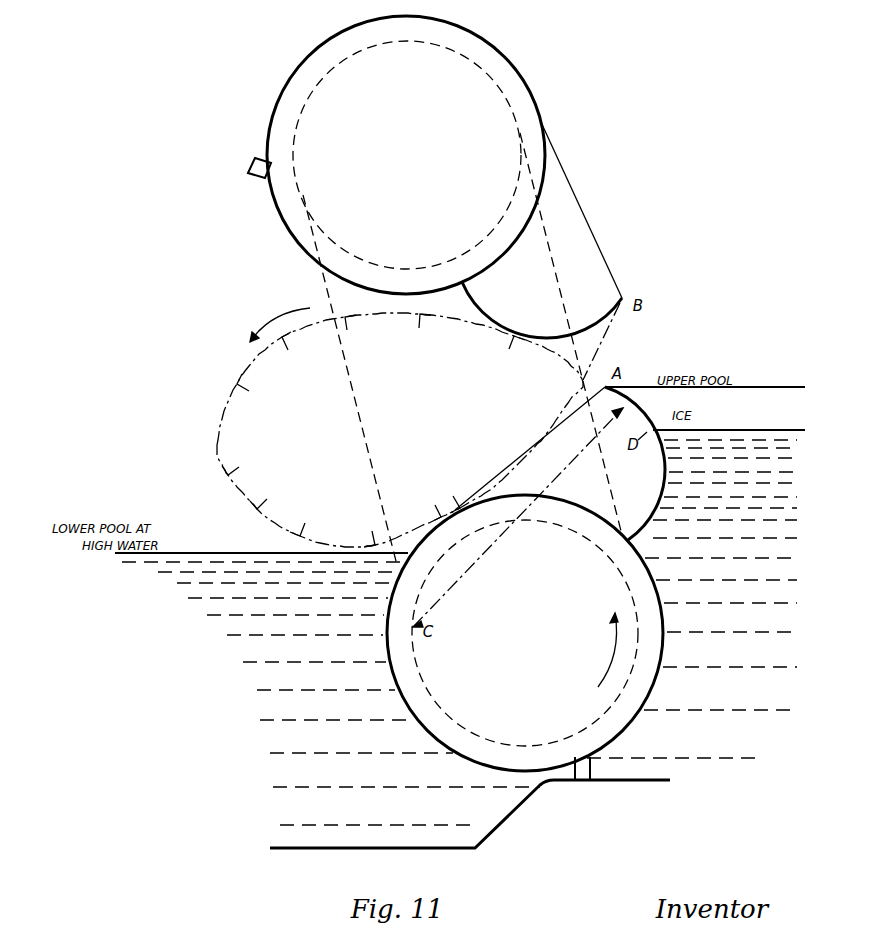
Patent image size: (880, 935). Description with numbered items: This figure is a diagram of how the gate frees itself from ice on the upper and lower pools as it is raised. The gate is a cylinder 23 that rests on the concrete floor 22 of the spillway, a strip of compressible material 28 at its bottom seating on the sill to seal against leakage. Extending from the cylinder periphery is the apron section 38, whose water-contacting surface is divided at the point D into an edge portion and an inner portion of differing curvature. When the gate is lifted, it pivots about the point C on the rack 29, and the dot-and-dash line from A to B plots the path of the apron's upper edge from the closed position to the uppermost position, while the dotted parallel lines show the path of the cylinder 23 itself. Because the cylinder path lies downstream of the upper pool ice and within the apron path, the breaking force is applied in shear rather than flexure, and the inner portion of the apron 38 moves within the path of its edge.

The floor of concrete 22 is at (536, 798).
The cylinder 23 is at (524, 73).
The strip of compressible material 28 is at (262, 181).
The rack 29 is at (322, 288).
The apron section 38 is at (497, 322).